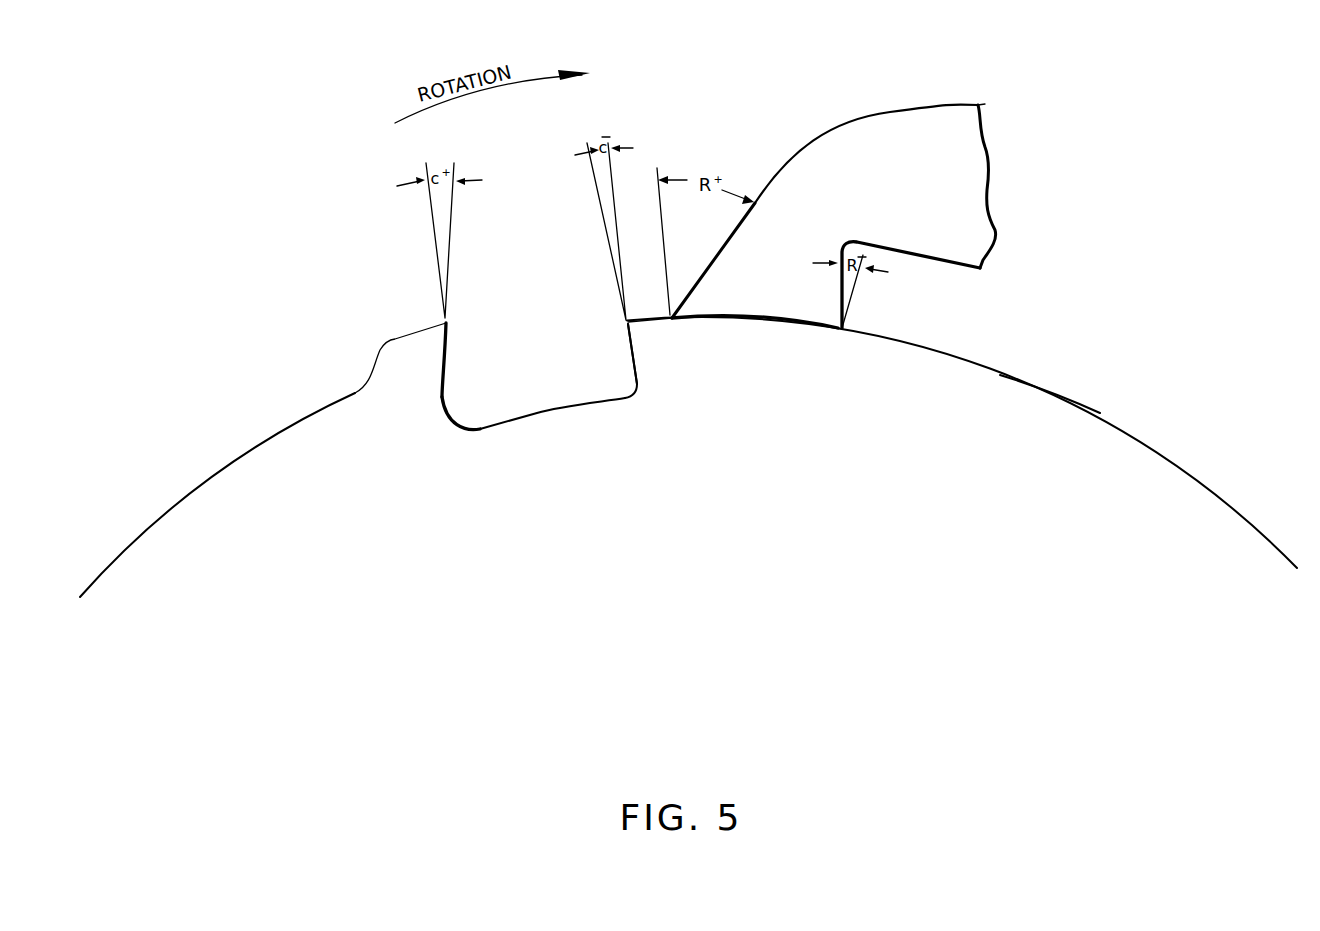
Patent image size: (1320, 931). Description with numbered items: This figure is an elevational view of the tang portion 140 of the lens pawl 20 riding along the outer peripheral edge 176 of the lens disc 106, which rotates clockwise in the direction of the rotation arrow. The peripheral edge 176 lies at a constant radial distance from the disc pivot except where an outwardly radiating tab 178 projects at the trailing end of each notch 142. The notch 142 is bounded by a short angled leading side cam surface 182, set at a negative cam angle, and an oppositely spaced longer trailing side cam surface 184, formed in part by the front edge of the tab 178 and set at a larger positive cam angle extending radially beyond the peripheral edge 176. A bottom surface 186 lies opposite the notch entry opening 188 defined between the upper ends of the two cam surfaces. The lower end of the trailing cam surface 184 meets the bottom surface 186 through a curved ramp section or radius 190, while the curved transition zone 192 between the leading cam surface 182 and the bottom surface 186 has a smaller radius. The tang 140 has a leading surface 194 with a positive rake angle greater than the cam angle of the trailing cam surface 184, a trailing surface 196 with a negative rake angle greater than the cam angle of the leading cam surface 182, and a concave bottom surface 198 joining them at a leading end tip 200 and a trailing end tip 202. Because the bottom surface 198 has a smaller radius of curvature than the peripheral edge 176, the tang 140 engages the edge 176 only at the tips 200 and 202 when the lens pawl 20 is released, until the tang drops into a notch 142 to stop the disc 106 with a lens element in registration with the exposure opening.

The lens pawl 20 is at (984, 87).
The disc 106 is at (1088, 433).
The tang portion 140 is at (834, 216).
The notch 142 is at (520, 282).
The outer peripheral edge 176 is at (267, 442).
The tab 178 is at (407, 352).
The leading edge or side cam surface 182 is at (630, 354).
The trailing edge or side cam surface 184 is at (447, 347).
The bottom surface 186 is at (538, 412).
The notch entry opening 188 is at (558, 341).
The curved ramp section or radius 190 is at (455, 418).
The curved transition zone 192 is at (635, 393).
The leading edge or surface 194 is at (710, 263).
The trailing edge or surface 196 is at (850, 295).
The concave bottom edge or surface 198 is at (763, 315).
The leading end tip 200 is at (675, 315).
The trailing end tip 202 is at (838, 327).